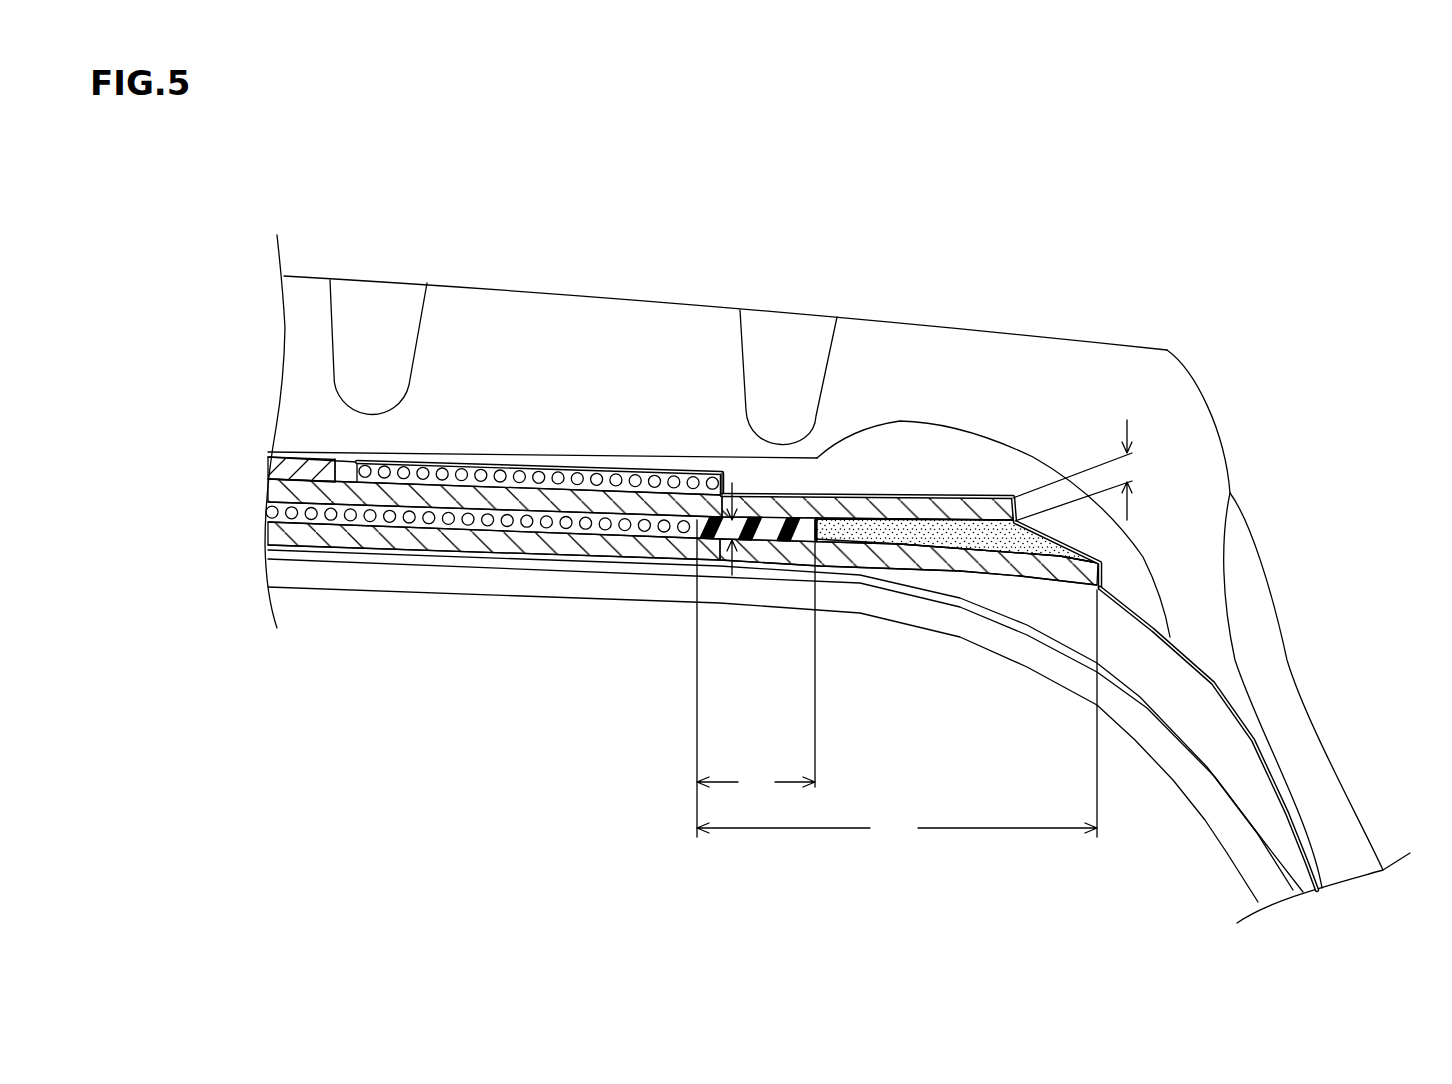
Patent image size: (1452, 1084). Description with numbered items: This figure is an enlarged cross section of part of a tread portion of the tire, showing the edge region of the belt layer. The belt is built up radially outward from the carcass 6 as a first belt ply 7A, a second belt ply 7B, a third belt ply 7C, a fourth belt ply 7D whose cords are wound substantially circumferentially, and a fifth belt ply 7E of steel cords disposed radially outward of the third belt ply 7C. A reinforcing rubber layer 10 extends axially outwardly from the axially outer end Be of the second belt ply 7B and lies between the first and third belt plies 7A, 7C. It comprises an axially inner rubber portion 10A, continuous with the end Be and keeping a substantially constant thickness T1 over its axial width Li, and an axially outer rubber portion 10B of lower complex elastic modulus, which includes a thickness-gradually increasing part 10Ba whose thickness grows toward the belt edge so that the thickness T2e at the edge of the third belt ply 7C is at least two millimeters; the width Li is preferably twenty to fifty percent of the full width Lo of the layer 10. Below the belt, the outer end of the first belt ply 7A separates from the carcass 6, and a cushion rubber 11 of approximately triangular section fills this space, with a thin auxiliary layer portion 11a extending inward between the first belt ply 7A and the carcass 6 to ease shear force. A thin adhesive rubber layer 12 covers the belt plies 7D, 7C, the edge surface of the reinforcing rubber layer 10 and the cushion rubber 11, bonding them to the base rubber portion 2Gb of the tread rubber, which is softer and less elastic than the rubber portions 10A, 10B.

The first belt ply 7A is at (275, 538).
The second belt ply 7B is at (273, 510).
The third belt ply 7C is at (272, 488).
The fourth belt ply 7D is at (553, 472).
The fifth belt ply 7E is at (273, 462).
The axially outer end of the second belt ply Be is at (716, 487).
The reinforcing rubber layer 10 is at (901, 369).
The axially inner rubber portion 10A is at (823, 500).
The axially outer rubber portion 10B is at (933, 530).
The thickness-gradually increasing part 10Ba is at (983, 533).
The base rubber portion 2Gb is at (1053, 483).
The thickness of the outer rubber portion at the third belt ply edge T2e is at (1130, 478).
The thickness of the inner rubber portion T1 is at (716, 577).
The axial width of the inner rubber portion Li is at (756, 678).
The axial full width of the reinforcing rubber layer Lo is at (897, 717).
The adhesive rubber layer 12 is at (1213, 683).
The cushion rubber 11 is at (947, 583).
The auxiliary layer portion 11a is at (590, 558).
The carcass 6 is at (510, 566).